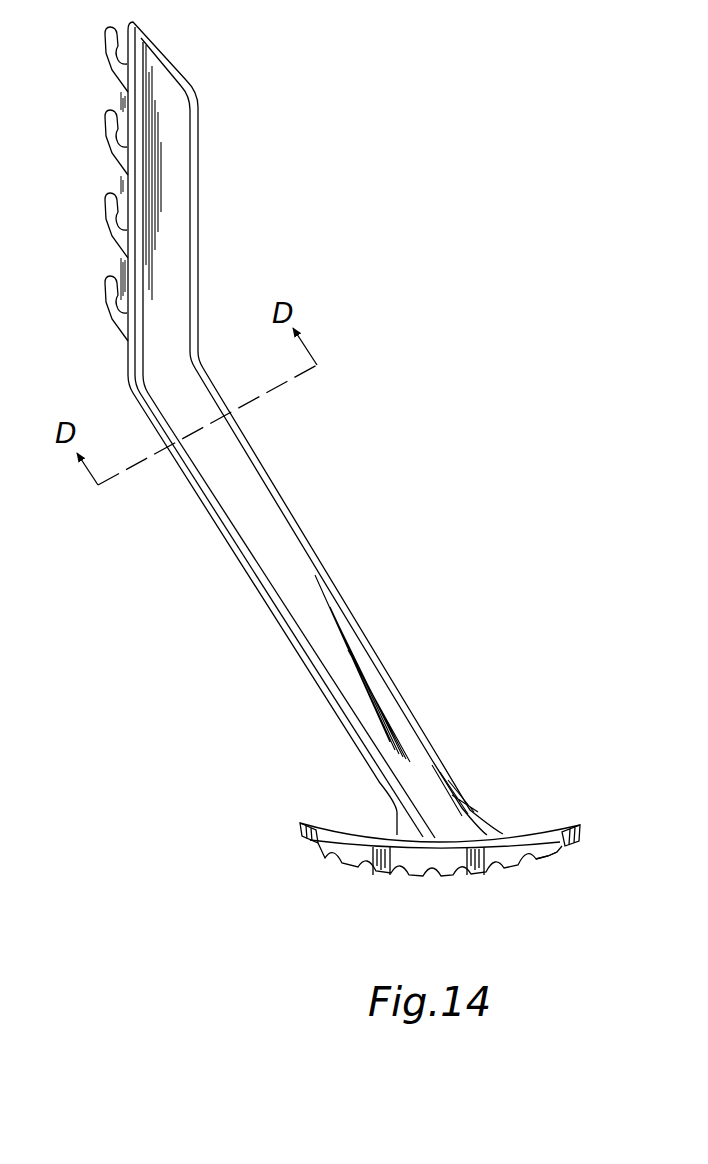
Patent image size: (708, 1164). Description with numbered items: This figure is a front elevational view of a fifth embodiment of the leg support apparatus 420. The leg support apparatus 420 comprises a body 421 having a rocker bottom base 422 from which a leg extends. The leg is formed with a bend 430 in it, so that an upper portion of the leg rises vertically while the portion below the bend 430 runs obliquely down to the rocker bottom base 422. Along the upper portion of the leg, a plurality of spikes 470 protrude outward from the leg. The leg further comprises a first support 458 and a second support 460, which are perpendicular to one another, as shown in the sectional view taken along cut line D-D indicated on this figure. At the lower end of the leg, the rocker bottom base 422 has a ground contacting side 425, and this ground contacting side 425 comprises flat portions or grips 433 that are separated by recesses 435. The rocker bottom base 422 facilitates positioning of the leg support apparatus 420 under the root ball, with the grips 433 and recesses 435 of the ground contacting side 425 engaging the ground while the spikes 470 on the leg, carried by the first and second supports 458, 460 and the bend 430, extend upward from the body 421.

The leg support apparatus 420 is at (187, 133).
The body 421 is at (252, 477).
The rocker bottom base 422 is at (512, 842).
The ground contacting side 425 is at (480, 877).
The bend 430 is at (193, 353).
The flat portions or grips 433 is at (347, 872).
The recesses 435 is at (397, 875).
The first support 458 is at (260, 558).
The second support 460 is at (307, 558).
The spikes 470 is at (106, 44).